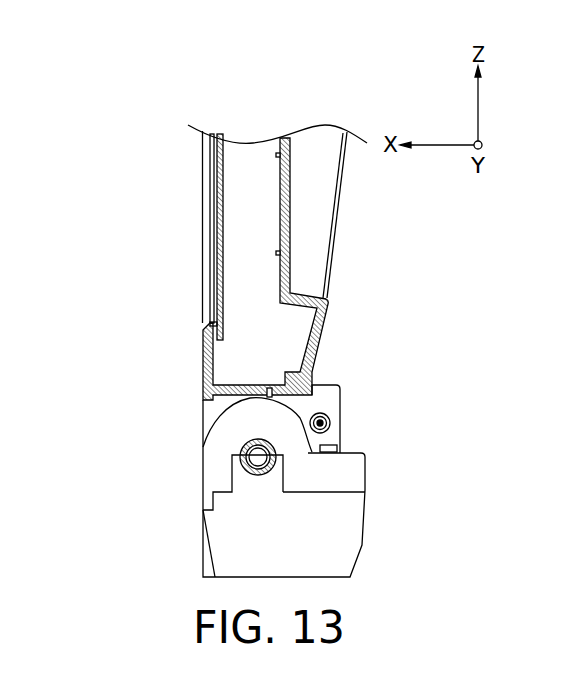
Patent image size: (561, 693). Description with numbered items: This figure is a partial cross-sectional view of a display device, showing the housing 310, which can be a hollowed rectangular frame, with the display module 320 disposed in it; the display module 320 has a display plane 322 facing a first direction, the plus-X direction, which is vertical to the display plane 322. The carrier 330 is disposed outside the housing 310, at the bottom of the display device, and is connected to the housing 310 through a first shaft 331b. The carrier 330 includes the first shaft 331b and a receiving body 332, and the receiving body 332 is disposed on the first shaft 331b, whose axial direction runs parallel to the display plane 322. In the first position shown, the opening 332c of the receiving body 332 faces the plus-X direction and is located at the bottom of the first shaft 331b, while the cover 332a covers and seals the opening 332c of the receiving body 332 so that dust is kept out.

The display module 320 is at (265, 126).
The display plane 322 is at (213, 215).
The housing 310 is at (203, 378).
The first shaft 331b is at (242, 446).
The receiving body 332 is at (362, 465).
The carrier 330 is at (250, 481).
The cover 332a is at (124, 543).
The opening 332c is at (203, 550).